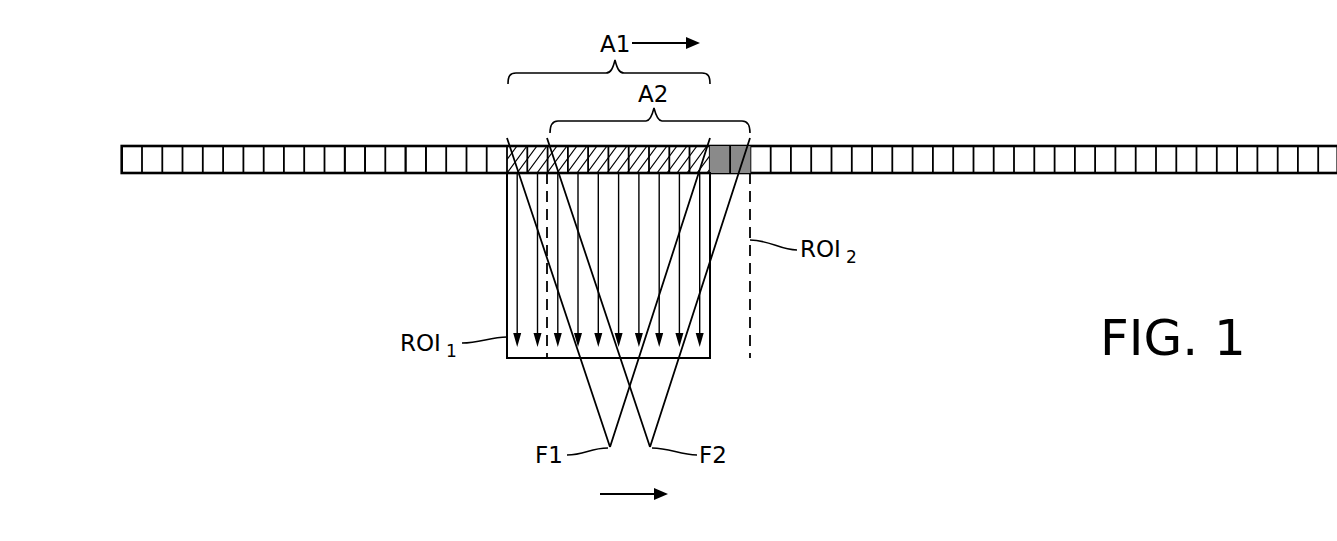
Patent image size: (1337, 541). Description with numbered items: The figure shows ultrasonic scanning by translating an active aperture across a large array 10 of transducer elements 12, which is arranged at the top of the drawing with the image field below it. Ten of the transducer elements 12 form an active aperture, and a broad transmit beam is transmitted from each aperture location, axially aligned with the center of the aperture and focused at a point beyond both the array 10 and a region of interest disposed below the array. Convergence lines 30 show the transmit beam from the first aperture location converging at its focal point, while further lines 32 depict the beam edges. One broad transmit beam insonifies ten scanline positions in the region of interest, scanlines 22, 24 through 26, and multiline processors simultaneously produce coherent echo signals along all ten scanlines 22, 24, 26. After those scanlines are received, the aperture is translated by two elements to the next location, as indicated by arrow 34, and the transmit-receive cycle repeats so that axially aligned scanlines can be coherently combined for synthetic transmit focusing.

The array 10 is at (118, 133).
The transducer elements 12 is at (355, 153).
The scanline 22 is at (507, 235).
The scanline 24 is at (537, 282).
The scanline 26 is at (700, 315).
The convergence lines 30 is at (582, 375).
The transmit beam right boundary 32 is at (677, 375).
The arrow 34 is at (600, 494).